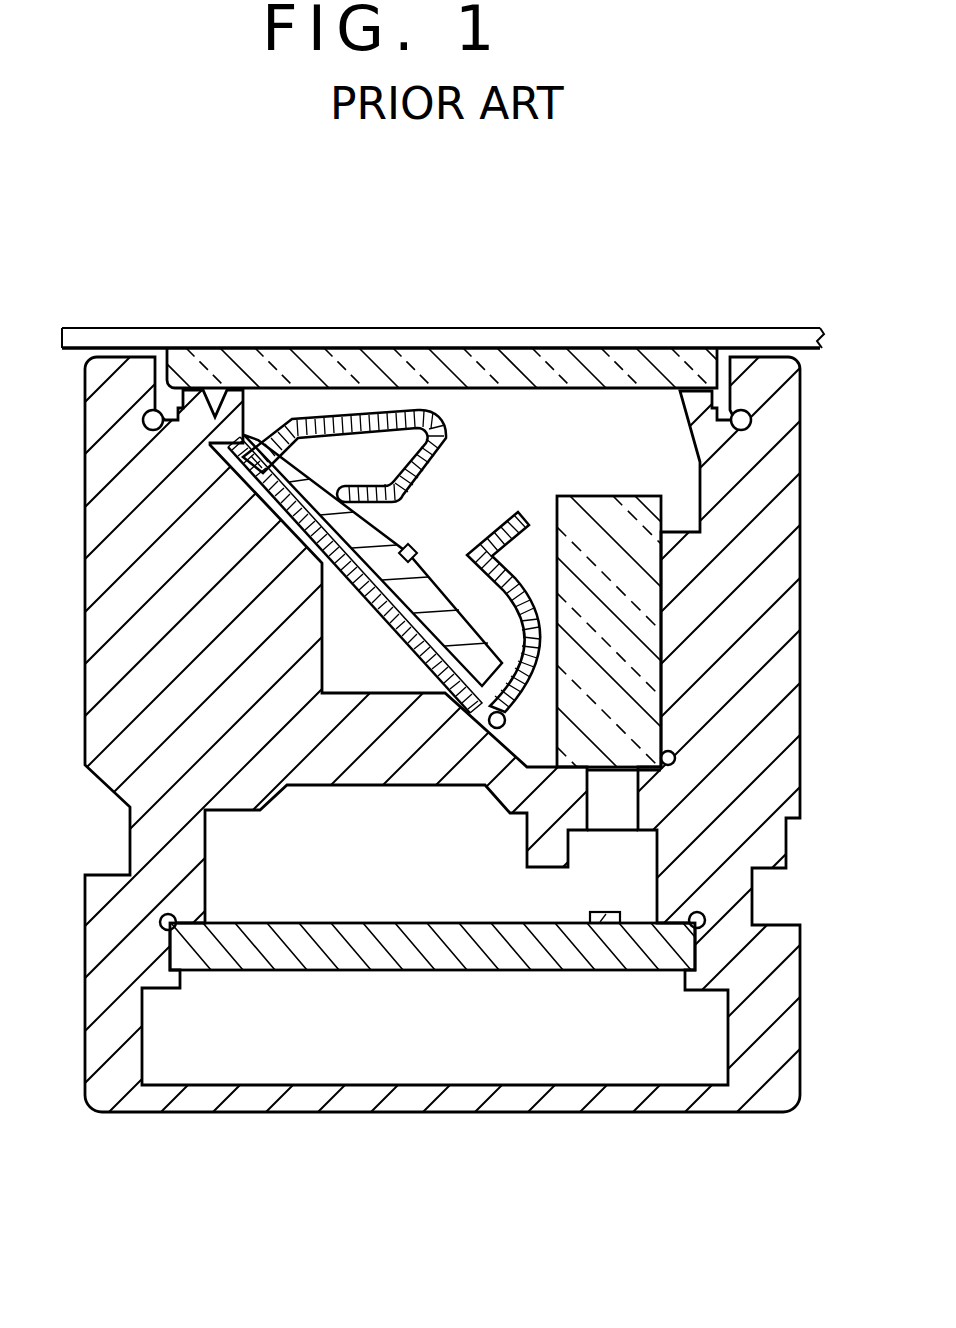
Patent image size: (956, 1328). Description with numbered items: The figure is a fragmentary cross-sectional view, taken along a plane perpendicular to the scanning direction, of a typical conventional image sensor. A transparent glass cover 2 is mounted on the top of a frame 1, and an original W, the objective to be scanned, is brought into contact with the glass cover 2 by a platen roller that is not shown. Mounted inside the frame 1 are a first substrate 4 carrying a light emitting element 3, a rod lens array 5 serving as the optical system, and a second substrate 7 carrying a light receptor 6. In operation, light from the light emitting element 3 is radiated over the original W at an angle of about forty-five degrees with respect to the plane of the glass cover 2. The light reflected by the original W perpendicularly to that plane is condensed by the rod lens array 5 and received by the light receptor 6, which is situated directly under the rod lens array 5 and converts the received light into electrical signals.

The frame 1 is at (766, 470).
The transparent cover 2 is at (207, 363).
The original W is at (410, 338).
The light emitting element 3 is at (430, 545).
The first substrate 4 is at (312, 505).
The rod lens array 5 is at (588, 533).
The light receptor 6 is at (605, 918).
The second substrate 7 is at (423, 948).